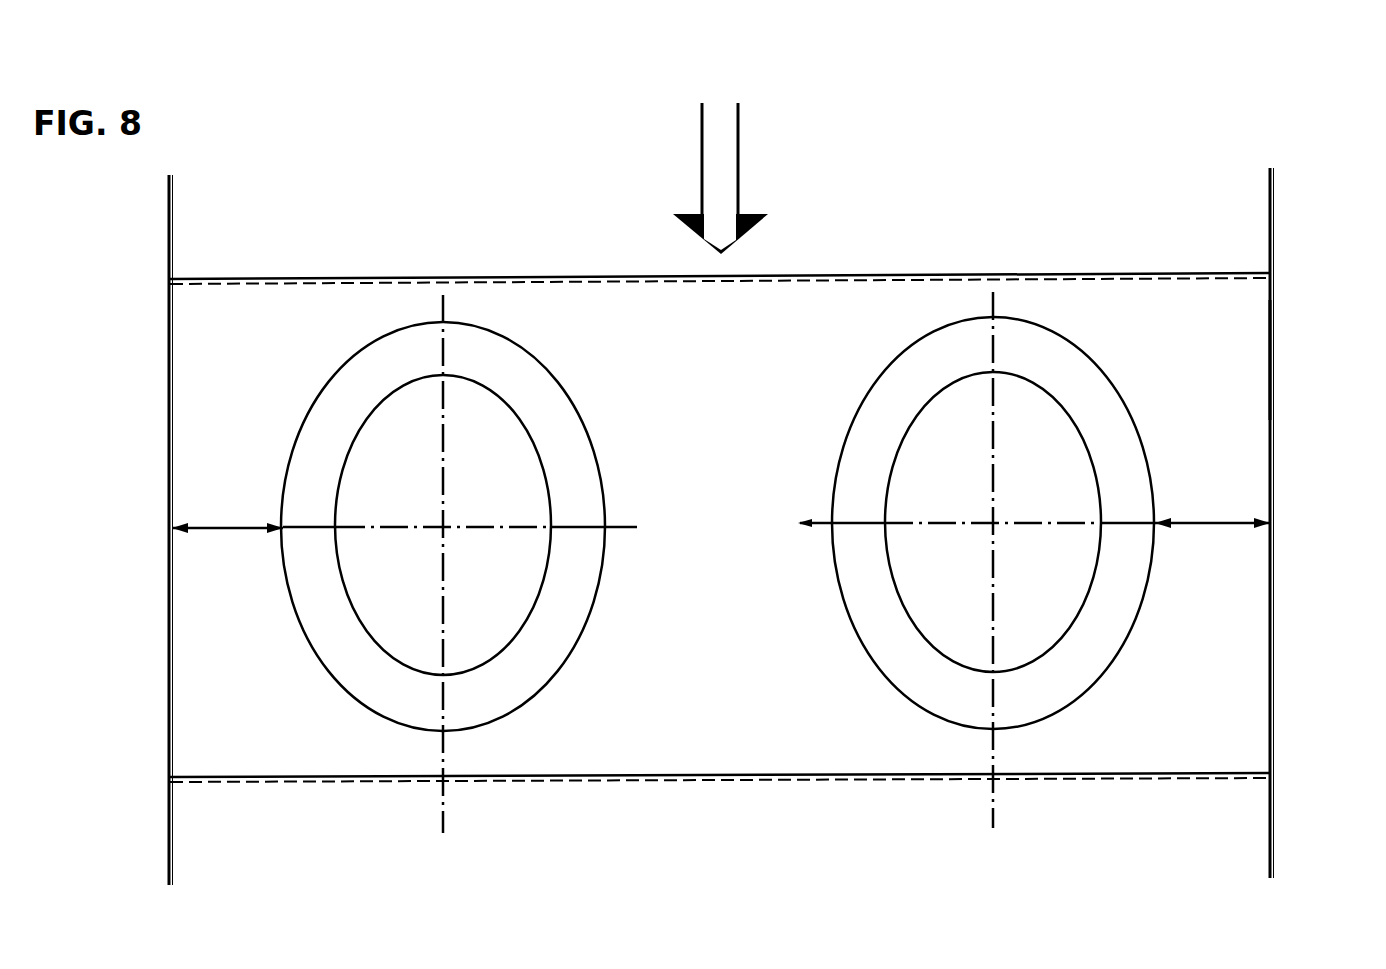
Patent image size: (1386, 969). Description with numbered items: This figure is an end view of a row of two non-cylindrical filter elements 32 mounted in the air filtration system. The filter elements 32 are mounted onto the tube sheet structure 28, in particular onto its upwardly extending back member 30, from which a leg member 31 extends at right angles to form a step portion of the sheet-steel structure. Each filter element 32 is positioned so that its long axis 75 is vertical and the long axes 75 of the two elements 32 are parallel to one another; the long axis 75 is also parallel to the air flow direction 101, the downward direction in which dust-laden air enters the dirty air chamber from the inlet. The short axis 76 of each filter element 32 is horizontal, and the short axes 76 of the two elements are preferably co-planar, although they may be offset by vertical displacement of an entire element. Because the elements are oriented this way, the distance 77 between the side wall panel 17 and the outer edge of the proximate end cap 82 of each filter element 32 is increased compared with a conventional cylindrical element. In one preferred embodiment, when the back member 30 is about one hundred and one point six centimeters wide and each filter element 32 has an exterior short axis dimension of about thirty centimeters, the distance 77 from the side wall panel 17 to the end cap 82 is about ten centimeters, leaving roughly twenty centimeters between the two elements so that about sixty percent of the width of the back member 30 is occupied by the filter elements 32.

The side wall panel 17 is at (168, 335).
The tube sheet structure 28 is at (1274, 360).
The back member 30 is at (684, 342).
The leg member 31 is at (398, 279).
The filter element 32 is at (901, 338).
The long axis 75 is at (719, 581).
The short axis 76 is at (719, 523).
The distance 77 is at (721, 511).
The end cap 82 is at (326, 386).
The air flow direction 101 is at (740, 131).